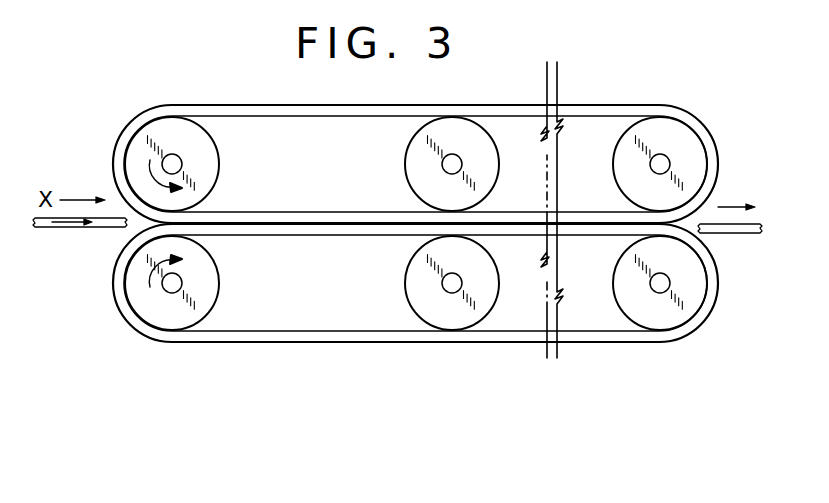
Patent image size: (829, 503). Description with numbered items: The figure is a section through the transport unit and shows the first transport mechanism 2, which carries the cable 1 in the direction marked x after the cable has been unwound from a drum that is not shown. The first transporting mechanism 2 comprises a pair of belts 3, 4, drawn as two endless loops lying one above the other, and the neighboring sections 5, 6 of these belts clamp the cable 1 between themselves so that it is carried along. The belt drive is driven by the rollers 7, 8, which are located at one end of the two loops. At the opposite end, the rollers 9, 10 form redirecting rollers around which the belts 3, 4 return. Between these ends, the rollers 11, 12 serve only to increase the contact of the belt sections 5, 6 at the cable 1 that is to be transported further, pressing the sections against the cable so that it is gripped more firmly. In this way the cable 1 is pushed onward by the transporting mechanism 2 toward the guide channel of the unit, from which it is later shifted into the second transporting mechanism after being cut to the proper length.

The cable 1 is at (103, 227).
The first transport mechanism 2 is at (335, 356).
The belt 3 is at (593, 113).
The belt 4 is at (583, 337).
The belt section 5 is at (345, 221).
The belt section 6 is at (343, 231).
The roller 7 is at (175, 315).
The roller 8 is at (137, 150).
The redirecting roller 9 is at (683, 300).
The redirecting roller 10 is at (662, 138).
The roller 11 is at (453, 315).
The roller 12 is at (453, 132).